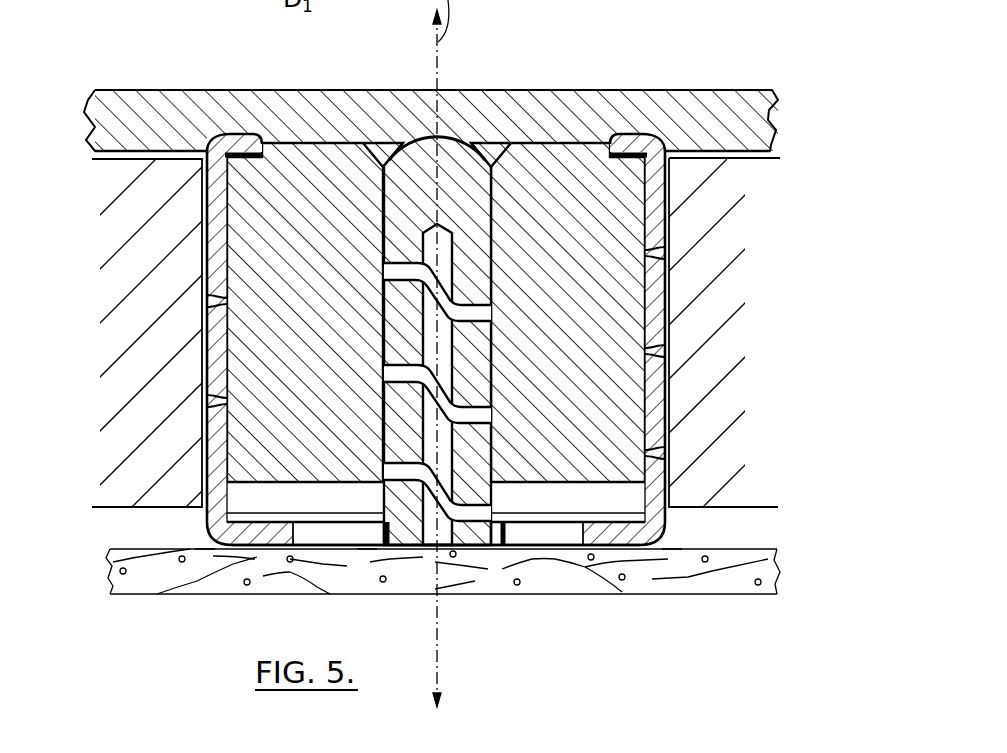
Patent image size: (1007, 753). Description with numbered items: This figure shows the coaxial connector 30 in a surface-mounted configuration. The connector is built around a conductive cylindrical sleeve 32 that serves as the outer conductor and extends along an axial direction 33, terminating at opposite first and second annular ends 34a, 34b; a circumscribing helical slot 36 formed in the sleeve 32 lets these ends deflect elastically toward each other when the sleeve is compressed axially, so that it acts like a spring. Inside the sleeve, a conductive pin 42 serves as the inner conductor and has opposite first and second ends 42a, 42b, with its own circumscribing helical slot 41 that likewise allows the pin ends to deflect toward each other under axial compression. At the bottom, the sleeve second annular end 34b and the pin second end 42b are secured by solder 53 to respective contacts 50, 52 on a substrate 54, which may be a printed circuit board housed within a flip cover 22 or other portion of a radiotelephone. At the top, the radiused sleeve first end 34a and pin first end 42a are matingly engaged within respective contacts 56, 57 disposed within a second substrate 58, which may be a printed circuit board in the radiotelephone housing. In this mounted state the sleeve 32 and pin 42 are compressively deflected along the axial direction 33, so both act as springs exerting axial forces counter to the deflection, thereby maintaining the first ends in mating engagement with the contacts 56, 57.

The flip cover 22 is at (740, 458).
The coaxial connector 30 is at (793, 320).
The conductive cylindrical sleeve 32 is at (655, 300).
The axial direction 33 is at (438, 672).
The first annular end 34a is at (207, 137).
The second annular end 34b is at (227, 532).
The helical slot 36 is at (650, 342).
The helical slot 41 is at (480, 406).
The conductive pin 42 is at (480, 242).
The pin first end 42a is at (443, 150).
The pin second end 42b is at (408, 535).
The contact 50 is at (262, 555).
The contact 52 is at (433, 552).
The solder 53 is at (206, 549).
The substrate 54 is at (157, 575).
The contact 56 is at (247, 133).
The contact 57 is at (458, 140).
The second substrate 58 is at (403, 121).